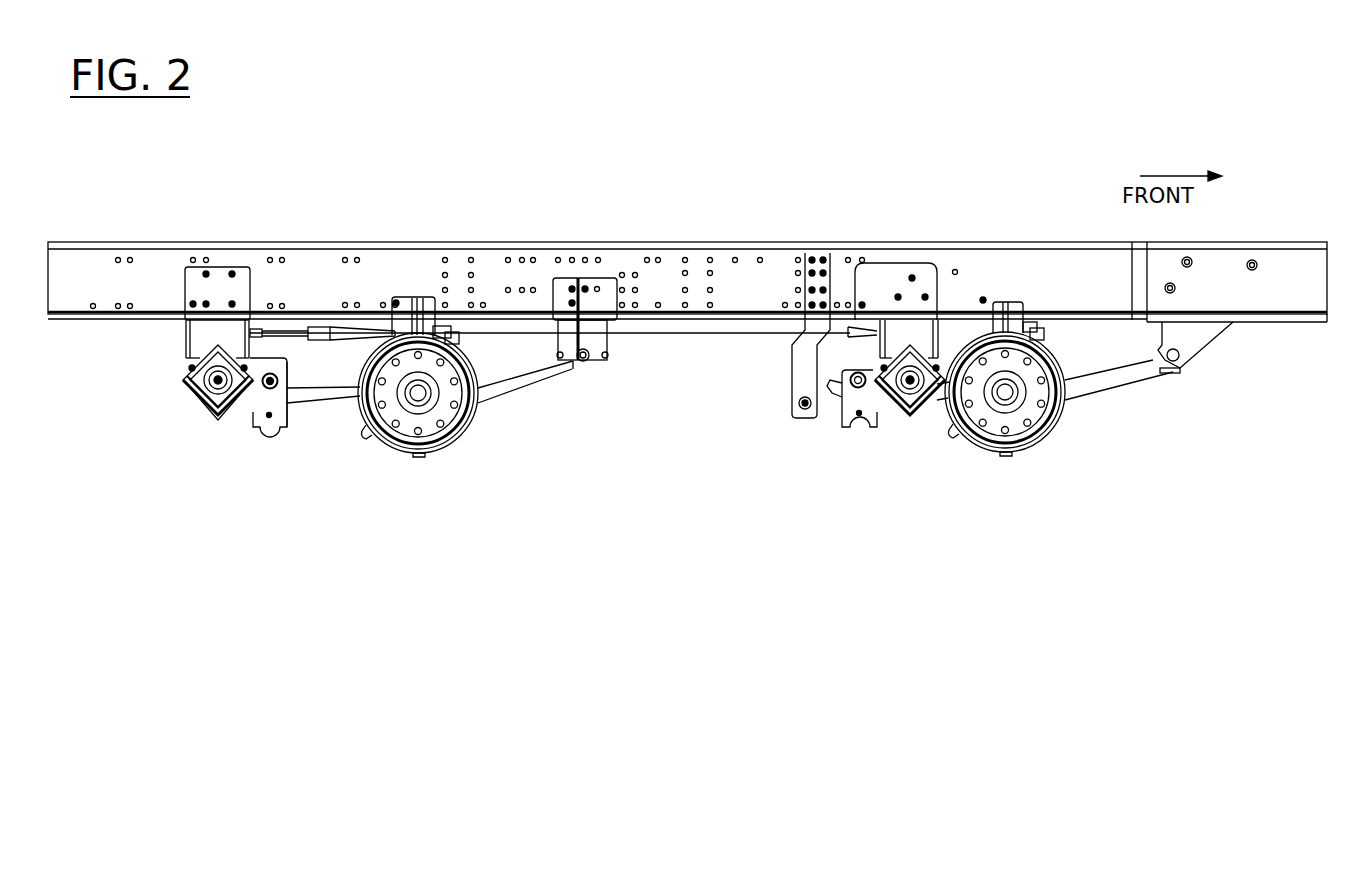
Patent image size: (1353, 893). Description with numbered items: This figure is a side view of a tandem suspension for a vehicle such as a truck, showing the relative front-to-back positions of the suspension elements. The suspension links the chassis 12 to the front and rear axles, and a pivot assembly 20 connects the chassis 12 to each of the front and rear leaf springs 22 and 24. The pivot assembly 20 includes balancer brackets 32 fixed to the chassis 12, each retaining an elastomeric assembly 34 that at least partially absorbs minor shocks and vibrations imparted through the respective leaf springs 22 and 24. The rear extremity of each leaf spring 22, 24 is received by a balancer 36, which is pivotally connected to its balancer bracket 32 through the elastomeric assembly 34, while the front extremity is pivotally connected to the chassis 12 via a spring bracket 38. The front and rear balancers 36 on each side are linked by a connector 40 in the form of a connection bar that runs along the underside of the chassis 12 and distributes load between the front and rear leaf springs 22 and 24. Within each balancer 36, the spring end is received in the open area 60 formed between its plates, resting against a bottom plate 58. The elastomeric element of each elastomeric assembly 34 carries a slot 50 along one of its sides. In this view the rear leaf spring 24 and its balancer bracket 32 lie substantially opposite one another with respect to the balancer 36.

The chassis 12 is at (427, 243).
The pivot assembly 20 is at (692, 470).
The front leaf spring 22 is at (1115, 380).
The rear leaf spring 24 is at (492, 385).
The balancer bracket 32 is at (218, 410).
The elastomeric assembly 34 is at (207, 383).
The balancer 36 is at (270, 426).
The spring bracket 38 is at (606, 362).
The connector 40 is at (530, 338).
The slot 50 is at (200, 400).
The bottom plate 58 is at (283, 383).
The open area 60 is at (292, 425).